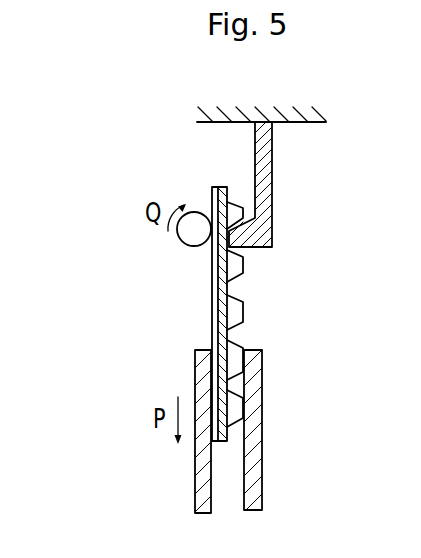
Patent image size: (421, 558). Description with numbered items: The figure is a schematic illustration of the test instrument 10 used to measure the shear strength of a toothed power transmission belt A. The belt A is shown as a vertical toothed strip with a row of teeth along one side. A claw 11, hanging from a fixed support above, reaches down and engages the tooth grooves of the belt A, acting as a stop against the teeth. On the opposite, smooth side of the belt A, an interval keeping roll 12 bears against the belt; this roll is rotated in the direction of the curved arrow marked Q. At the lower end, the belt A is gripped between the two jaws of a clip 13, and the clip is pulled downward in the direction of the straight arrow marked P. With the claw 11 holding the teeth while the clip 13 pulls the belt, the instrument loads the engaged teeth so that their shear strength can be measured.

The test instrument 10 is at (207, 168).
The toothed power transmission belt A is at (211, 307).
The claw 11 is at (268, 247).
The interval keeping roll 12 is at (180, 232).
The clip 13 is at (255, 405).